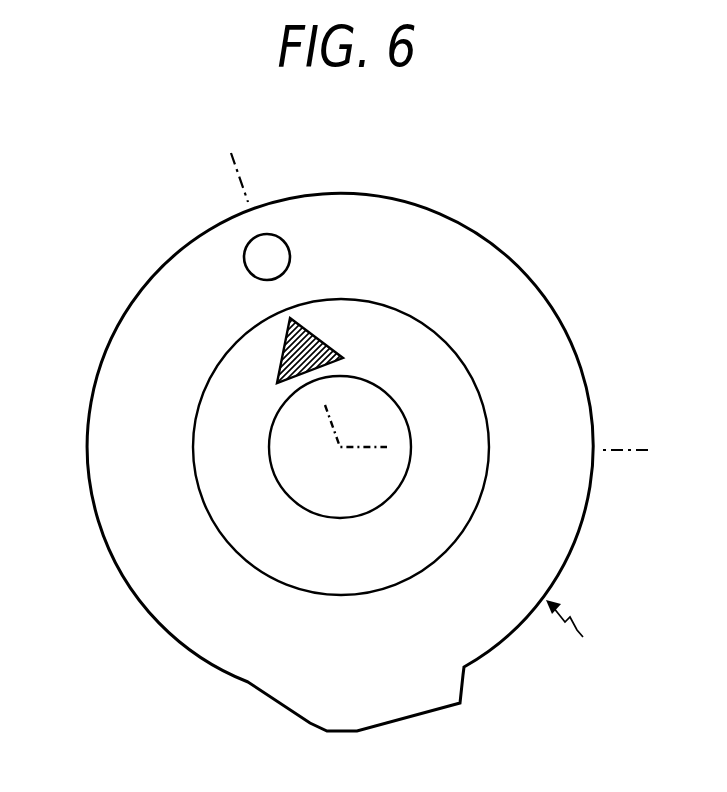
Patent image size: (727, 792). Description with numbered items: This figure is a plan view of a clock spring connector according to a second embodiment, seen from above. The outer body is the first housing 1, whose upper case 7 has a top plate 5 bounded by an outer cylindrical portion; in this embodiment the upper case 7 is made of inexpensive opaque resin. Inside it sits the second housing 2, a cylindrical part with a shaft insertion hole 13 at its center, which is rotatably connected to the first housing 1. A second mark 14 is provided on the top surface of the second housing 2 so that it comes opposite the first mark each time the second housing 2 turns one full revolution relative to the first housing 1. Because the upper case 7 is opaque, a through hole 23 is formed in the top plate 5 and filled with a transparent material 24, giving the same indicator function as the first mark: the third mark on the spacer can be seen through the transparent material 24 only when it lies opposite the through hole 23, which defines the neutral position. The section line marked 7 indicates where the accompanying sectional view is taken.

The first housing 1 is at (572, 631).
The second housing 2 is at (430, 365).
The top plate 5 is at (108, 493).
The upper case 7 is at (231, 153).
The shaft insertion hole 13 is at (293, 480).
The second mark 14 is at (283, 353).
The through hole 23 is at (288, 237).
The transparent material 24 is at (257, 252).